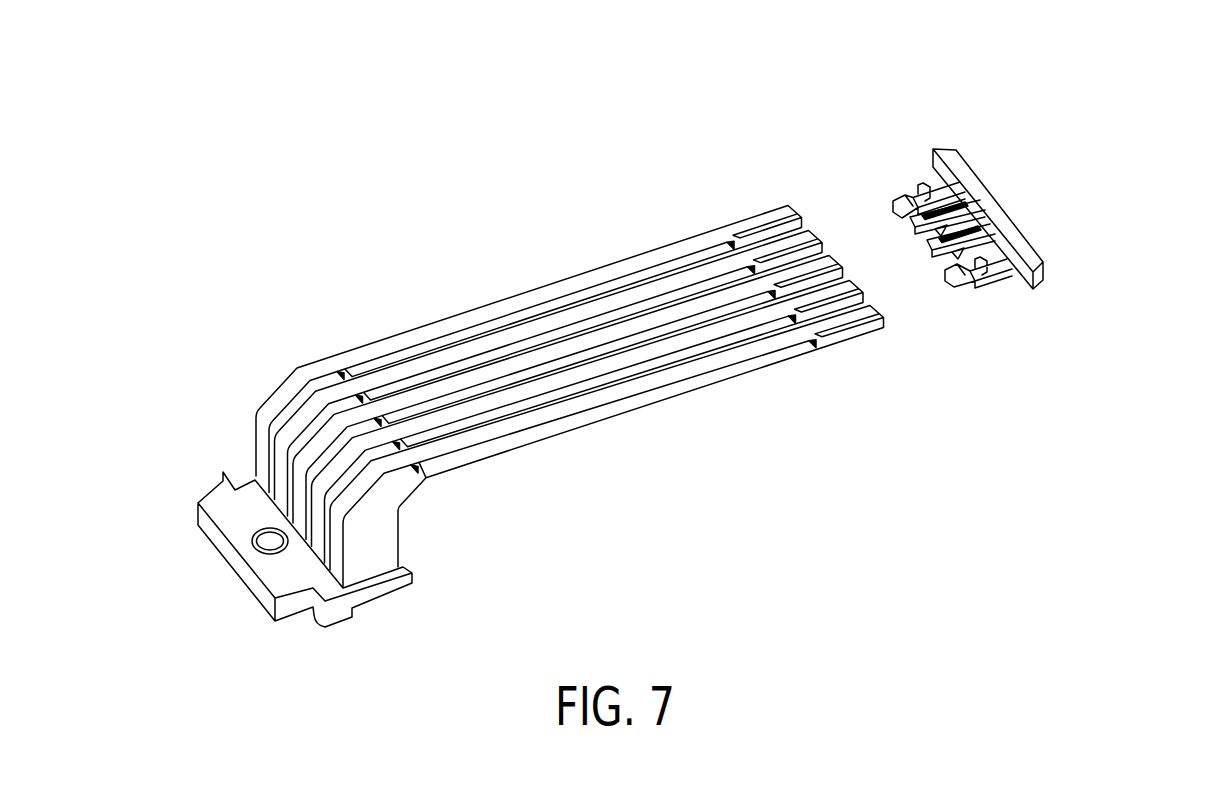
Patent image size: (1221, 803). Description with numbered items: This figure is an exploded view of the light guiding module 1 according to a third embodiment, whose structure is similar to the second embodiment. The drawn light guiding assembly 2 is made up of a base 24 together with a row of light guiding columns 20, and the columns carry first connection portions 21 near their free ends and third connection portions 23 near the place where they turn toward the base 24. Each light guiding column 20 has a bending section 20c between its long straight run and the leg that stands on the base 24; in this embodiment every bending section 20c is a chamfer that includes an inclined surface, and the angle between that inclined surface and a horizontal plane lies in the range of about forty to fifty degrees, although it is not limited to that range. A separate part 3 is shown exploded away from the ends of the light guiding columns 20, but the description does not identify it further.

The light guiding module 1 is at (1198, 69).
The light guiding assembly 2 is at (637, 262).
The light guiding columns 20 is at (653, 380).
The bending sections 20c is at (355, 500).
The first connection portions 21 is at (789, 318).
The third connection portions 23 is at (397, 442).
The base 24 is at (227, 530).
The insulating block 3 is at (958, 168).